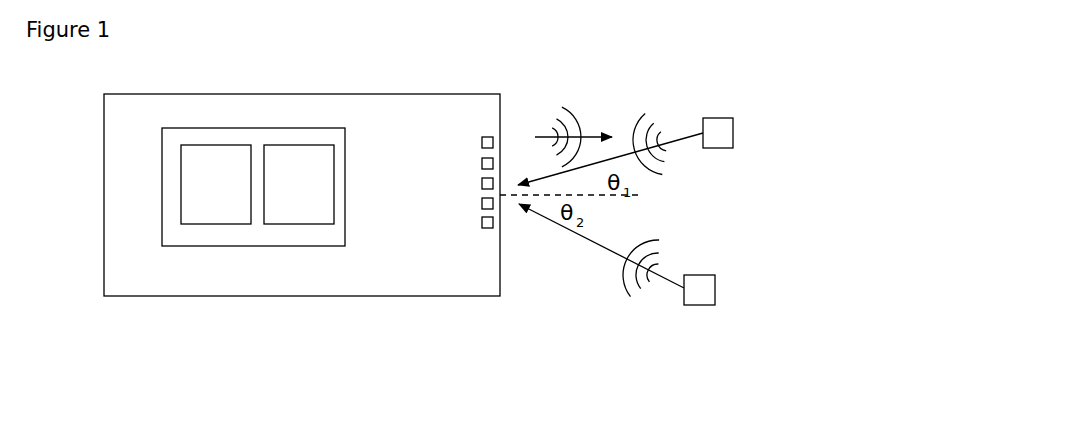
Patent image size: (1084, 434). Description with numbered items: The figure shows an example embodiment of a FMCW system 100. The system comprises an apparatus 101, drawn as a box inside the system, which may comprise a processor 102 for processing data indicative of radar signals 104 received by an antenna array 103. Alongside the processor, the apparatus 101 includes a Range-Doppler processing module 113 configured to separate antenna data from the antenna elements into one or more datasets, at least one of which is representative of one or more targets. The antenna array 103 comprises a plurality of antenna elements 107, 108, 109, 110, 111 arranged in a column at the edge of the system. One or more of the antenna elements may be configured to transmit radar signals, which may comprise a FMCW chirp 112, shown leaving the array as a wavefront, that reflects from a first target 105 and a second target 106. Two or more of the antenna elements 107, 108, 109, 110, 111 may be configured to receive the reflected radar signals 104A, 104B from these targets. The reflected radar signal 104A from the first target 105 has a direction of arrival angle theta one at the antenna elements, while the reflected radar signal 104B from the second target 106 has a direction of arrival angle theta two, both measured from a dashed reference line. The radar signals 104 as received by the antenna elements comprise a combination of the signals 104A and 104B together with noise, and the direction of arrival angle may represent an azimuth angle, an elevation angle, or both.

The FMCW system 100 is at (303, 296).
The apparatus 101 is at (250, 246).
The processor 102 is at (296, 175).
The Range-Doppler processing module 113 is at (204, 178).
The antenna array 103 is at (485, 245).
The antenna element 107 is at (482, 141).
The antenna element 108 is at (482, 163).
The antenna element 109 is at (482, 185).
The antenna element 110 is at (482, 203).
The antenna element 111 is at (482, 225).
The FMCW chirp 112 is at (566, 107).
The radar signals 104 is at (641, 337).
The reflected radar signal 104A is at (650, 113).
The reflected radar signal 104B is at (623, 278).
The first target 105 is at (717, 116).
The second target 106 is at (703, 305).